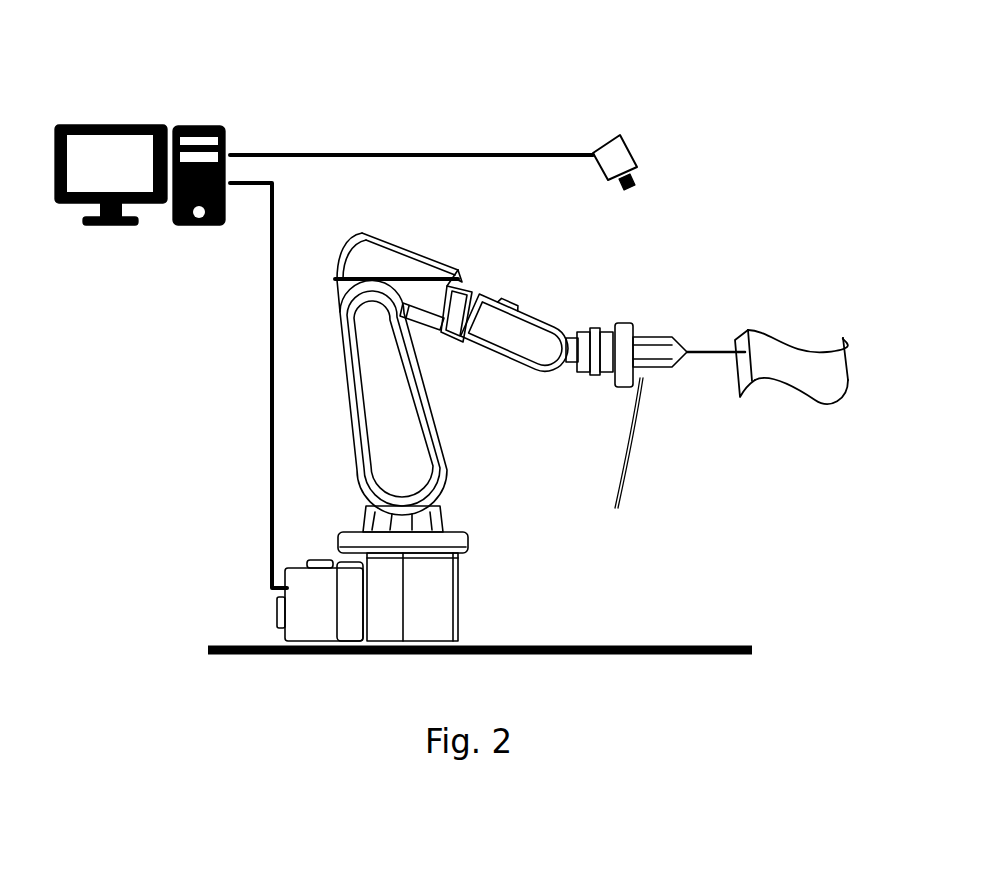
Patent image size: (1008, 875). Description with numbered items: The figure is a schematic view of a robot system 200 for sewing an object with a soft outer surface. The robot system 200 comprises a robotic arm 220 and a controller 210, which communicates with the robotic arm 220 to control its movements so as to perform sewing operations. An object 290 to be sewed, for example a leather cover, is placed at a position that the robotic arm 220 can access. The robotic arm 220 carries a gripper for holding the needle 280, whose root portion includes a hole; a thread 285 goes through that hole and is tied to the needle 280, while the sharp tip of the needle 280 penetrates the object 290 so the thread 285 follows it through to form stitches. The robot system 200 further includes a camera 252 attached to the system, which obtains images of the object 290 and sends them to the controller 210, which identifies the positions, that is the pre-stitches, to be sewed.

The robot system 200 is at (737, 100).
The controller 210 is at (169, 100).
The robotic arm 220 is at (544, 386).
The camera 252 is at (610, 157).
The needle 280 is at (693, 365).
The thread 285 is at (623, 447).
The object 290 is at (805, 370).